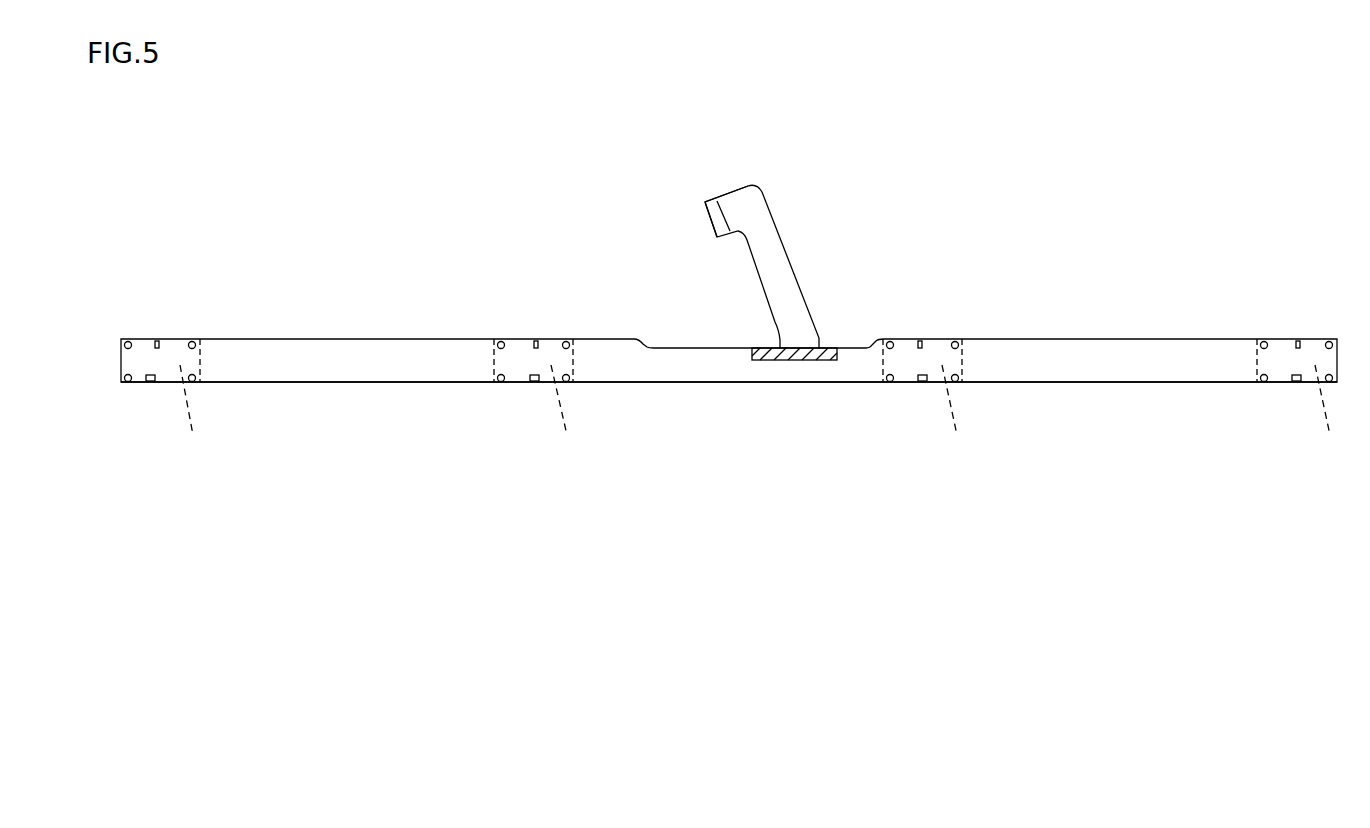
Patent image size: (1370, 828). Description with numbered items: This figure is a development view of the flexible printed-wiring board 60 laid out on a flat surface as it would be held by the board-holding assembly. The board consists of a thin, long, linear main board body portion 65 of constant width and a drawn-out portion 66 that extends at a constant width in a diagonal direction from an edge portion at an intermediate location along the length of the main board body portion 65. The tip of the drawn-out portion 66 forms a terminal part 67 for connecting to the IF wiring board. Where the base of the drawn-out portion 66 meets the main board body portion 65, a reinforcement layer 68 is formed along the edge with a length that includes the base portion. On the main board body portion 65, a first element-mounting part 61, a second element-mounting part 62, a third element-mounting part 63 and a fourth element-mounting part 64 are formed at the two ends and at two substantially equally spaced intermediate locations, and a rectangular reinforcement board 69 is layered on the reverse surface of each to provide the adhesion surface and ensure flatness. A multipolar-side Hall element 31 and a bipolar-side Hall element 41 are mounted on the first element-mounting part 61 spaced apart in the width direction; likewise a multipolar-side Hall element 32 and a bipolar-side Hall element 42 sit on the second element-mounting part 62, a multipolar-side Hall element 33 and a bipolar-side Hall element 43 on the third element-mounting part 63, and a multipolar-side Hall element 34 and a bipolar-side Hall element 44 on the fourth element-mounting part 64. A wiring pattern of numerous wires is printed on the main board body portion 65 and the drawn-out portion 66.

The flexible printed-wiring board 60 is at (1042, 281).
The main board body portion 65 is at (1143, 339).
The drawn-out portion 66 is at (799, 273).
The terminal part 67 is at (718, 210).
The reinforcement layer 68 is at (797, 352).
The reinforcement board 69 is at (762, 415).
The first element-mounting part 61 is at (1283, 386).
The second element-mounting part 62 is at (911, 386).
The third element-mounting part 63 is at (522, 386).
The fourth element-mounting part 64 is at (148, 386).
The bipolar-side Hall element 41 is at (1299, 338).
The bipolar-side Hall element 42 is at (921, 338).
The bipolar-side Hall element 43 is at (537, 338).
The bipolar-side Hall element 44 is at (158, 338).
The multipolar-side Hall element 31 is at (1292, 378).
The multipolar-side Hall element 32 is at (918, 378).
The multipolar-side Hall element 33 is at (530, 378).
The multipolar-side Hall element 34 is at (146, 378).